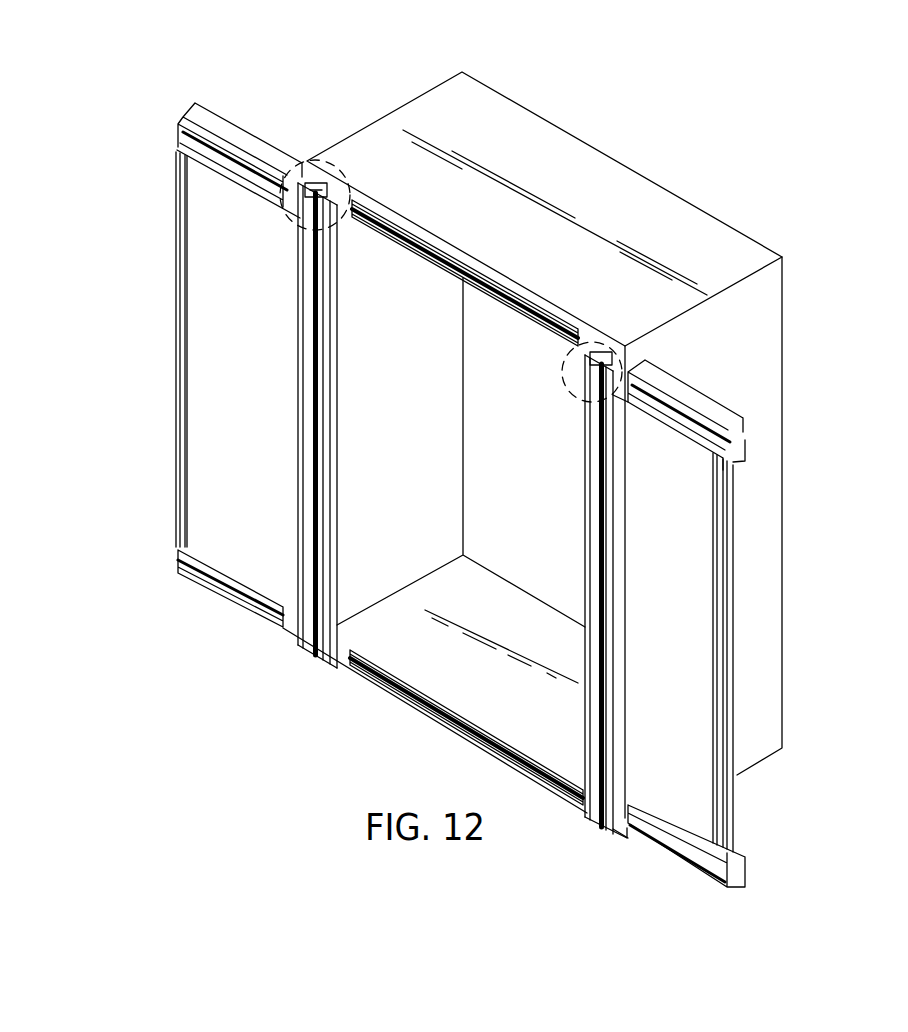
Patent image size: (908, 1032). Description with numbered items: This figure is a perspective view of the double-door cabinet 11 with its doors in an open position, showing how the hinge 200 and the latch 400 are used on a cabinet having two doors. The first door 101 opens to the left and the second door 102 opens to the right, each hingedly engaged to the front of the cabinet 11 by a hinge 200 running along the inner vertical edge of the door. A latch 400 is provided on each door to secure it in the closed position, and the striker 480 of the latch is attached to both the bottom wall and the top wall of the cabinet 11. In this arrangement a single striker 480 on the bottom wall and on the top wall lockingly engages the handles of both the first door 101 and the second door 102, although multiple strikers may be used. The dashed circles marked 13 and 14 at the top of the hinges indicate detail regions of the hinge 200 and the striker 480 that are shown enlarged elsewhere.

The double-door cabinet 11 is at (643, 197).
The detail view 13 indicator 13 is at (298, 174).
The detail view 14 indicator 14 is at (586, 328).
The first door 101 is at (218, 330).
The second door 102 is at (670, 668).
The hinge 200 is at (322, 345).
The latch 400 is at (222, 113).
The striker 480 is at (455, 277).